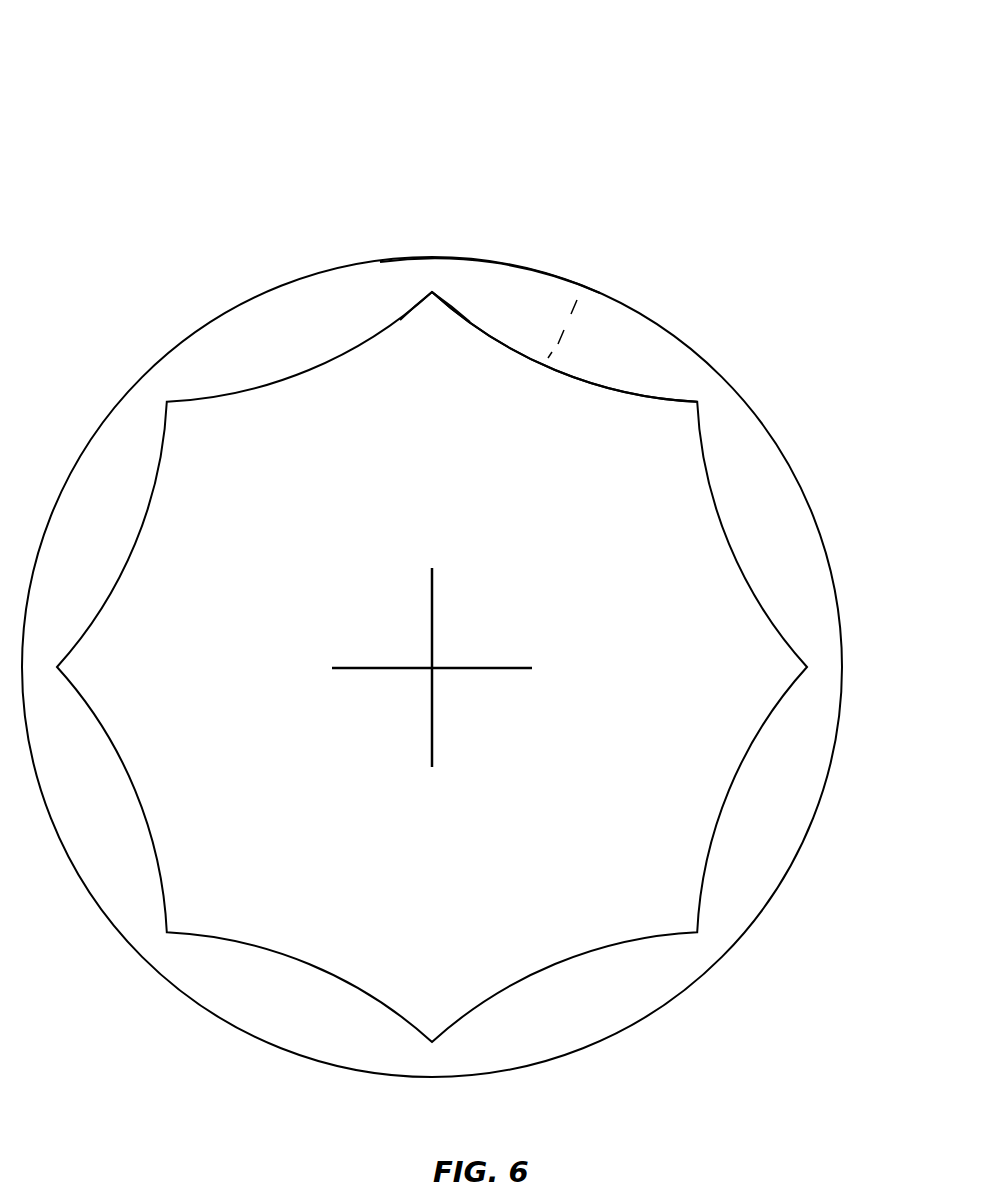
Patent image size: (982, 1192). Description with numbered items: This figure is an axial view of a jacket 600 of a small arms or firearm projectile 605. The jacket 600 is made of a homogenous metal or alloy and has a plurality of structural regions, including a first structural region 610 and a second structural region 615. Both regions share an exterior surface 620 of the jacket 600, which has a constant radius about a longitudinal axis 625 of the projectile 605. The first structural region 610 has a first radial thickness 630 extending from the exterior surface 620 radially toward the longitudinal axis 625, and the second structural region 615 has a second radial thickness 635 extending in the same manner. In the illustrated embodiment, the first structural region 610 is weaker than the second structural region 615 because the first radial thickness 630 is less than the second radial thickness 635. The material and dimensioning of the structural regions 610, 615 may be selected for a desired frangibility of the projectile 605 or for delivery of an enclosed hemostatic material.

The jacket 600 is at (208, 322).
The projectile 605 is at (813, 100).
The first structural region 610 is at (434, 235).
The second structural region 615 is at (612, 282).
The exterior surface 620 is at (522, 267).
The longitudinal axis 625 is at (430, 667).
The first radial thickness 630 is at (432, 278).
The second radial thickness 635 is at (563, 328).